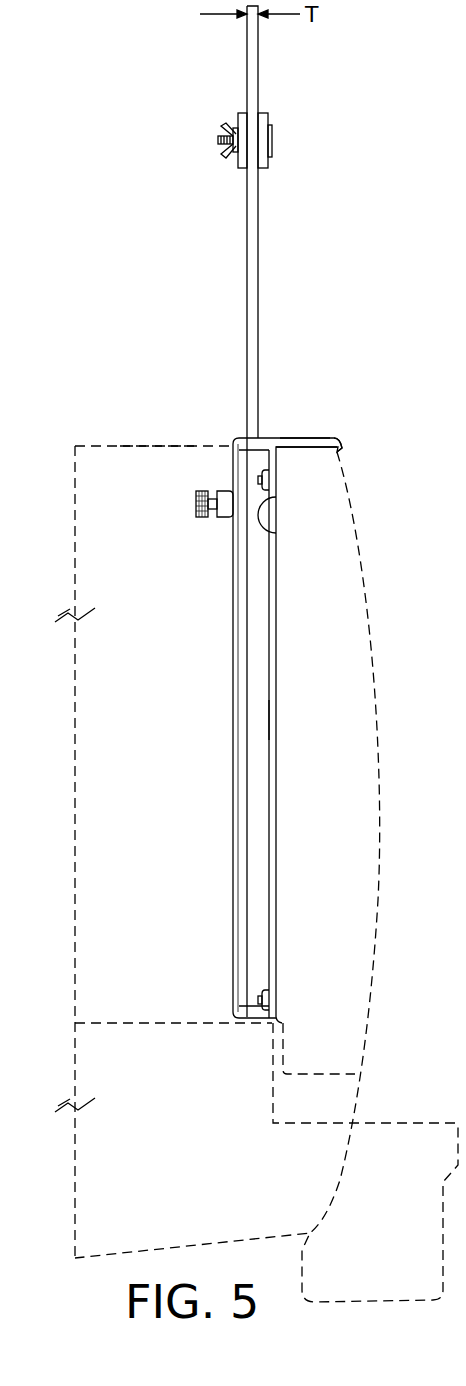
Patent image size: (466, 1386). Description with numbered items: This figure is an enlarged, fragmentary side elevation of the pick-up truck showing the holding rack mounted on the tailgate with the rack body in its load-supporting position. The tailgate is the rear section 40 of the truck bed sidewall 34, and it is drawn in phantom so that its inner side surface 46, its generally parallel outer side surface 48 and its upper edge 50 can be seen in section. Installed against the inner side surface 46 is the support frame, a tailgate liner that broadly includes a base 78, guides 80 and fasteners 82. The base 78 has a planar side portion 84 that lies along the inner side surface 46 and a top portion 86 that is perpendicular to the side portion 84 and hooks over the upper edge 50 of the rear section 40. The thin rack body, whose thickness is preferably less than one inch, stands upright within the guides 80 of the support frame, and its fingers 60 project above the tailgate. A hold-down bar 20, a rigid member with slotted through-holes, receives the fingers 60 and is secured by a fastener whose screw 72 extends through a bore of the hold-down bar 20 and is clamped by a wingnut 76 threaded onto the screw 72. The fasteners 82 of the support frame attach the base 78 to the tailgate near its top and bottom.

The fingers 60 is at (260, 62).
The hold-down bar 20 is at (269, 117).
The wingnut 76 is at (227, 130).
The screw 72 is at (216, 148).
The guides 80 is at (234, 668).
The base 78 is at (268, 718).
The top portion 86 is at (302, 438).
The upper edge 50 is at (325, 440).
The planar side portion 84 is at (273, 458).
The fasteners 82 is at (262, 480).
The inner side surface 46 is at (276, 500).
The rear section 40 is at (345, 536).
The outer side surface 48 is at (370, 578).
The sidewall 34 is at (143, 442).